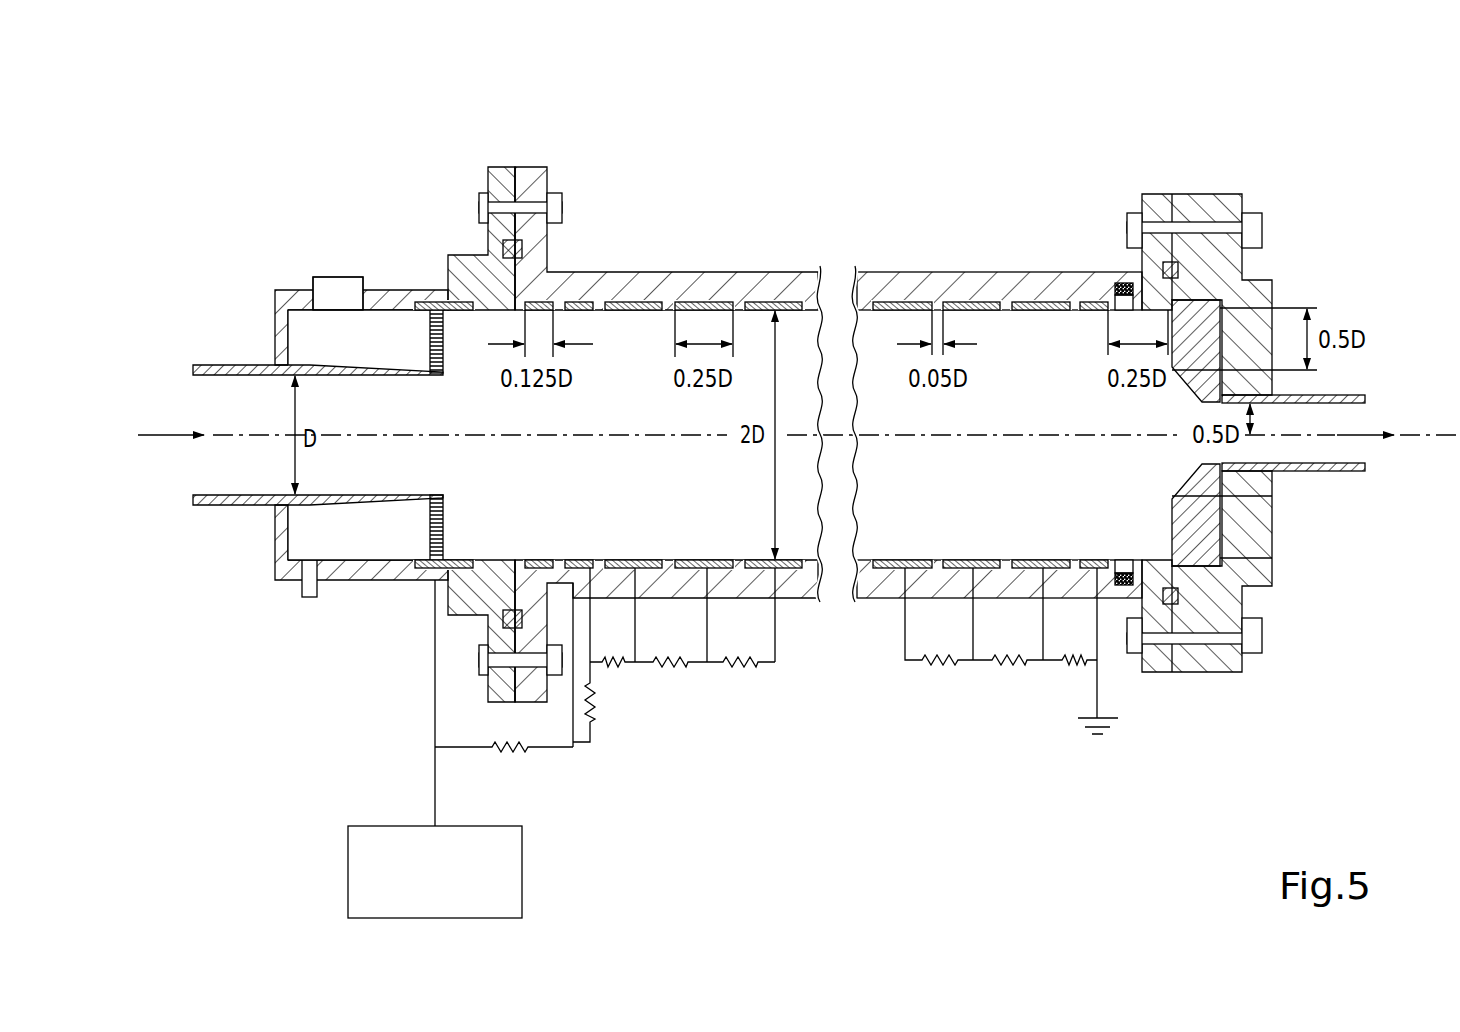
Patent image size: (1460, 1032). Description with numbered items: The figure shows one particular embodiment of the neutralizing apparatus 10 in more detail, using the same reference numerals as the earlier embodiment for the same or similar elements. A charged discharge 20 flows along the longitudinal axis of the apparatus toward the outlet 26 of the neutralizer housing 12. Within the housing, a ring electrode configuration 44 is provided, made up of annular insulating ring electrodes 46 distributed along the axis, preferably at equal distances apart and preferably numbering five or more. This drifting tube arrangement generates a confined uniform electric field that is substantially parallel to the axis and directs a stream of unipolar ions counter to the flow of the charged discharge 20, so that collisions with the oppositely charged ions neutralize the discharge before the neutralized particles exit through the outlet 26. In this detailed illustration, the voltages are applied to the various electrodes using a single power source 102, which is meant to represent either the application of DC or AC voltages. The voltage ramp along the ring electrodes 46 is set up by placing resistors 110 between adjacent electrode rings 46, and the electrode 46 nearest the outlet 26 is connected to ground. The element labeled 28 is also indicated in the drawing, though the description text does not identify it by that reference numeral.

The neutralizing apparatus 10 is at (1045, 158).
The neutralizer housing 12 is at (928, 268).
The charged discharge 20 is at (153, 438).
The outlet 26 is at (1377, 458).
The inlet region 28 is at (338, 258).
The ring electrode configuration 44 is at (714, 290).
The ring electrodes 46 is at (538, 558).
The power source 102 is at (348, 876).
The resistors 110 is at (612, 667).